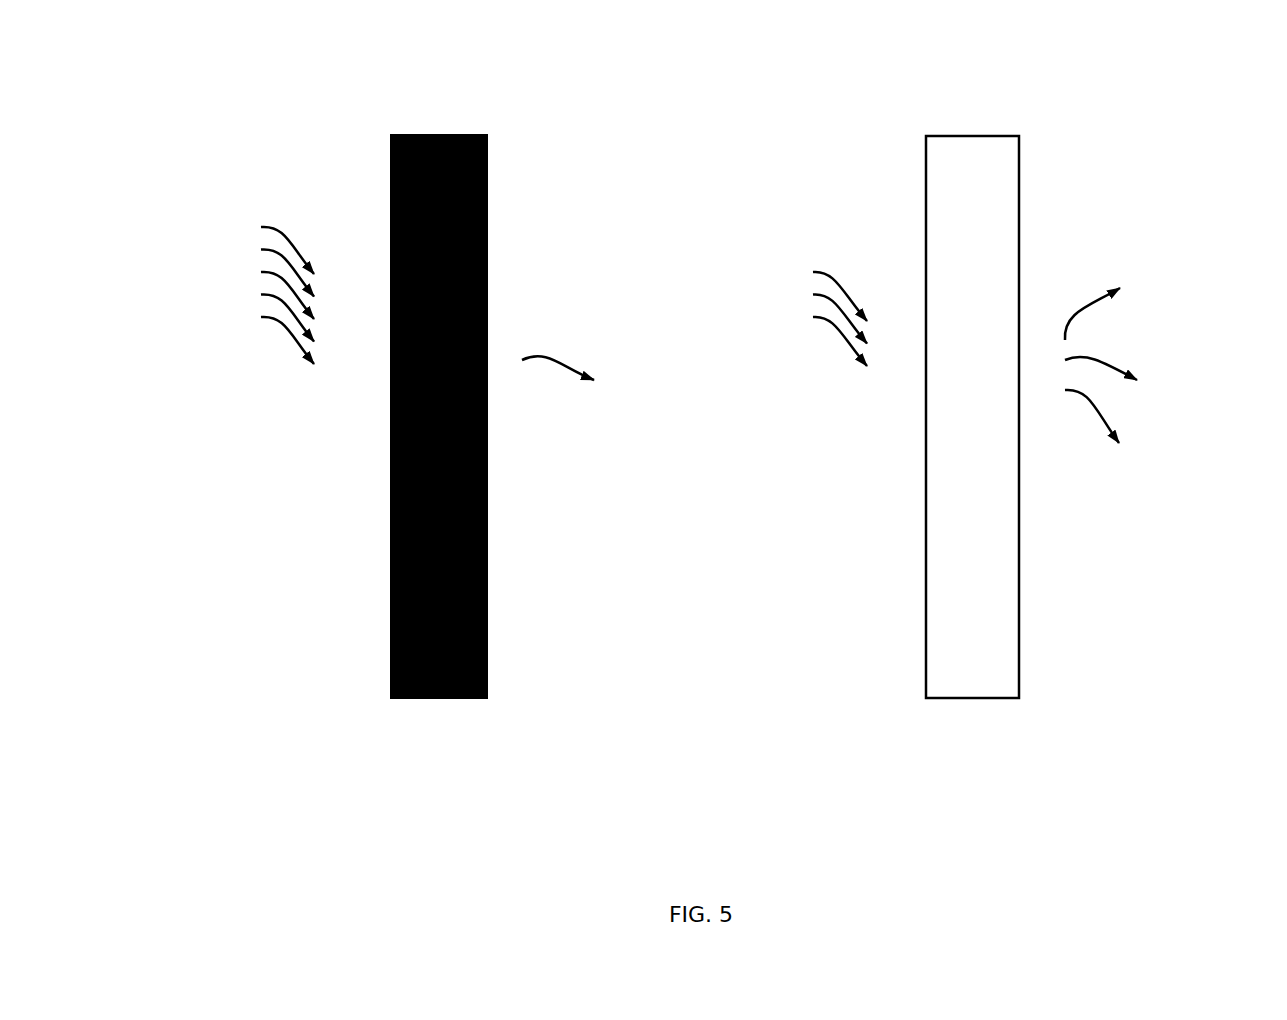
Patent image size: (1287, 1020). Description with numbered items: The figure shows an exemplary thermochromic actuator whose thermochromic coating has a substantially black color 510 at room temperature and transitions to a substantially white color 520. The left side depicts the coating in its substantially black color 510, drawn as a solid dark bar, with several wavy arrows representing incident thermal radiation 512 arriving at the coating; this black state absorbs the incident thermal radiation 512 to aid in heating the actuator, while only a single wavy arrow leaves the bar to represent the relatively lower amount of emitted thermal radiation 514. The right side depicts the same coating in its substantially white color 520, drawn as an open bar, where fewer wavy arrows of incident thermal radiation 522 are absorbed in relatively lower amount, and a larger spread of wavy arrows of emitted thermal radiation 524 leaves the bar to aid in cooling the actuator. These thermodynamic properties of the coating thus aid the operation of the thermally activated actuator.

The substantially black color 510 is at (410, 137).
The incident thermal radiation 512 is at (249, 219).
The emitted thermal radiation 514 is at (571, 337).
The substantially white color 520 is at (945, 135).
The incident thermal radiation 522 is at (802, 259).
The emitted thermal radiation 524 is at (1151, 319).